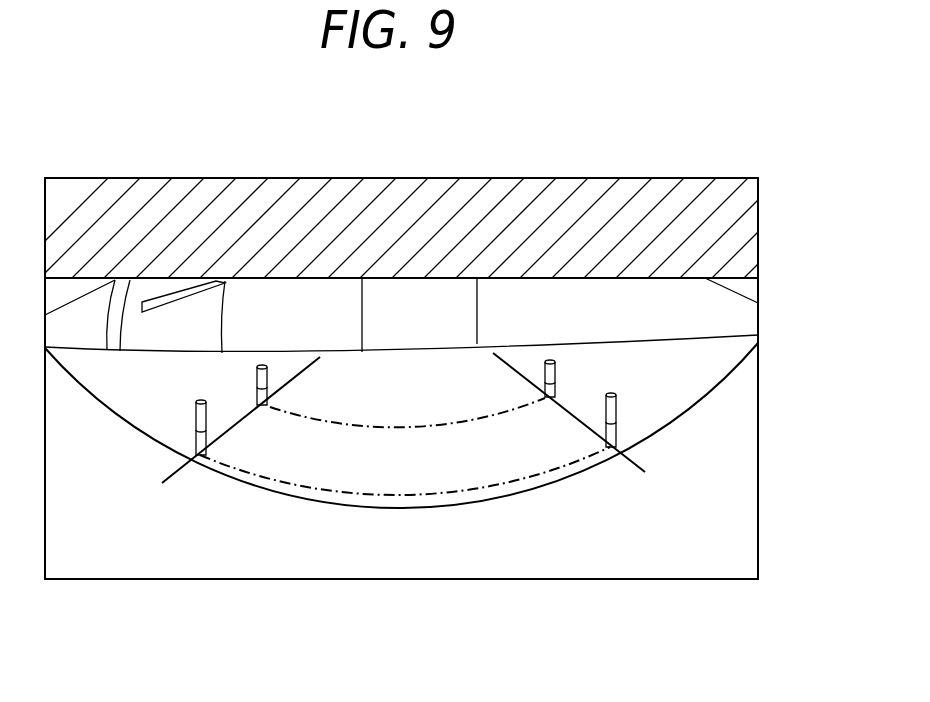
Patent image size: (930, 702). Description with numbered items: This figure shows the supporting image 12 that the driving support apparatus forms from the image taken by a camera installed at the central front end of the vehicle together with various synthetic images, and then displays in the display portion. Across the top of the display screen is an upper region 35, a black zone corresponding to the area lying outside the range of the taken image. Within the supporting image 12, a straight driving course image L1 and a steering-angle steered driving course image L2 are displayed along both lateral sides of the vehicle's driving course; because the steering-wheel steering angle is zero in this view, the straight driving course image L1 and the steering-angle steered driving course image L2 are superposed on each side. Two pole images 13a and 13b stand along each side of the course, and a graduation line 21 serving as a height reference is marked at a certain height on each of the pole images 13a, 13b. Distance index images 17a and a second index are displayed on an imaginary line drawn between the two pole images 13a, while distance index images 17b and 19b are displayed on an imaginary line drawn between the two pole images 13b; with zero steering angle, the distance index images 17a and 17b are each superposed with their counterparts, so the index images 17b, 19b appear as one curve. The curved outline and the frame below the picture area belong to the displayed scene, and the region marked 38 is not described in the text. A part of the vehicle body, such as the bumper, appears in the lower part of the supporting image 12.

The supporting image 12 is at (95, 143).
The upper region 35 is at (737, 236).
The housing 38 is at (691, 557).
The pole image 13a is at (195, 415).
The pole image 13b is at (257, 372).
The graduation line 21 is at (403, 420).
The distance index image 17a is at (405, 501).
The distance index image 17b is at (407, 437).
The distance index image 19b is at (373, 426).
The straight driving course image L1 is at (403, 388).
The steering-angle steered driving course image L2 is at (300, 380).